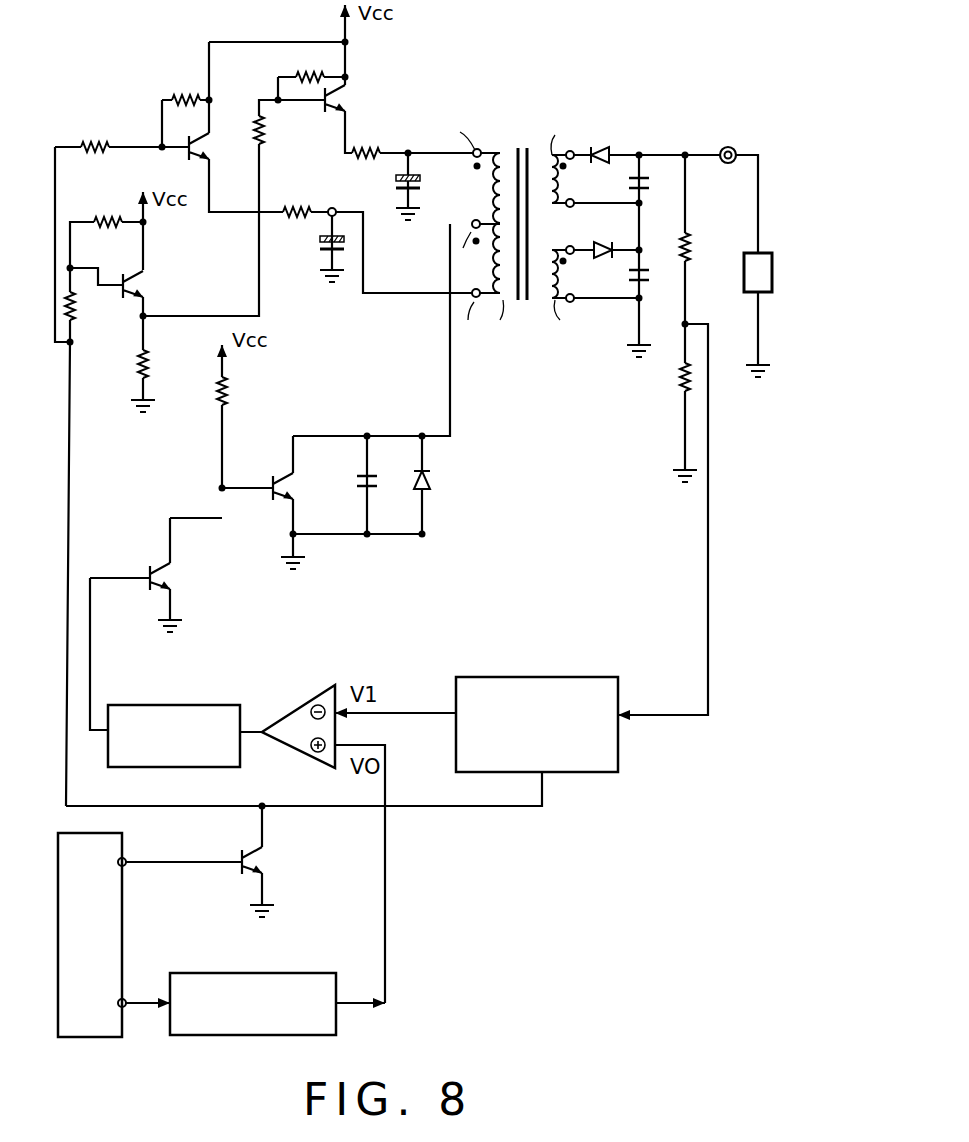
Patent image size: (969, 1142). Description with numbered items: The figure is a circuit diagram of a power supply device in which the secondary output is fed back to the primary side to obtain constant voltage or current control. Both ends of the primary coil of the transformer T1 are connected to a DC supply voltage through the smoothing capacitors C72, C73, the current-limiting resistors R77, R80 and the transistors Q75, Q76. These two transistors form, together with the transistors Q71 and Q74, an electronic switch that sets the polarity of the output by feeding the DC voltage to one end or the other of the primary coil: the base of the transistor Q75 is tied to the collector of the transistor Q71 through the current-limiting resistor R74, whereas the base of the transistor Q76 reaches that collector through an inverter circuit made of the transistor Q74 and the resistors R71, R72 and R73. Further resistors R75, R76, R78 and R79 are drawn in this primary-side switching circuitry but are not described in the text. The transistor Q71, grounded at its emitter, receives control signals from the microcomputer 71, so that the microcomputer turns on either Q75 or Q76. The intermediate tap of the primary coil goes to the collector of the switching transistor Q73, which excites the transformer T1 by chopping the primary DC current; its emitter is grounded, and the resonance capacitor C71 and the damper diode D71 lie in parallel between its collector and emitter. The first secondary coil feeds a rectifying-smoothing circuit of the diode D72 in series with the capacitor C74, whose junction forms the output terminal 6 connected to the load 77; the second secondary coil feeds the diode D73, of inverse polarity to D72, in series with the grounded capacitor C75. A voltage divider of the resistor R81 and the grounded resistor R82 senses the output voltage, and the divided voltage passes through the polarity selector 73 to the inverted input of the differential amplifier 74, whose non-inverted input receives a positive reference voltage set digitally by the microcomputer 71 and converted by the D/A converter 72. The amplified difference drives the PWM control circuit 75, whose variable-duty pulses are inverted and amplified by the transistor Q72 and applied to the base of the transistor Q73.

The microcomputer 71 is at (122, 900).
The D/A converter 72 is at (294, 973).
The polarity selector 73 is at (570, 677).
The differential amplifier 74 is at (316, 696).
The PWM control circuit 75 is at (207, 704).
The load 77 is at (744, 272).
The output terminal 6 is at (729, 166).
The transformer T1 is at (520, 150).
The resistor R71 is at (78, 306).
The resistor R72 is at (148, 358).
The resistor R73 is at (108, 218).
The current-limiting resistor R74 is at (92, 142).
The resistor R75 is at (190, 94).
The resistor R76 is at (254, 128).
The current-limiting resistor R77 is at (291, 215).
The resistor R78 is at (302, 75).
The resistor R79 is at (228, 388).
The current-limiting resistor R80 is at (358, 157).
The resistor R81 is at (680, 250).
The grounded resistor R82 is at (680, 378).
The resonance capacitor C71 is at (354, 482).
The smoothing capacitor C72 is at (344, 244).
The smoothing capacitor C73 is at (418, 180).
The capacitor C74 is at (632, 183).
The grounded capacitor C75 is at (632, 275).
The damper diode D71 is at (433, 480).
The diode D72 is at (598, 150).
The diode D73 is at (597, 240).
The transistor Q71 is at (264, 860).
The transistor Q72 is at (166, 575).
The switching transistor Q73 is at (292, 480).
The transistor Q74 is at (138, 286).
The transistor Q75 is at (195, 154).
The transistor Q76 is at (333, 108).